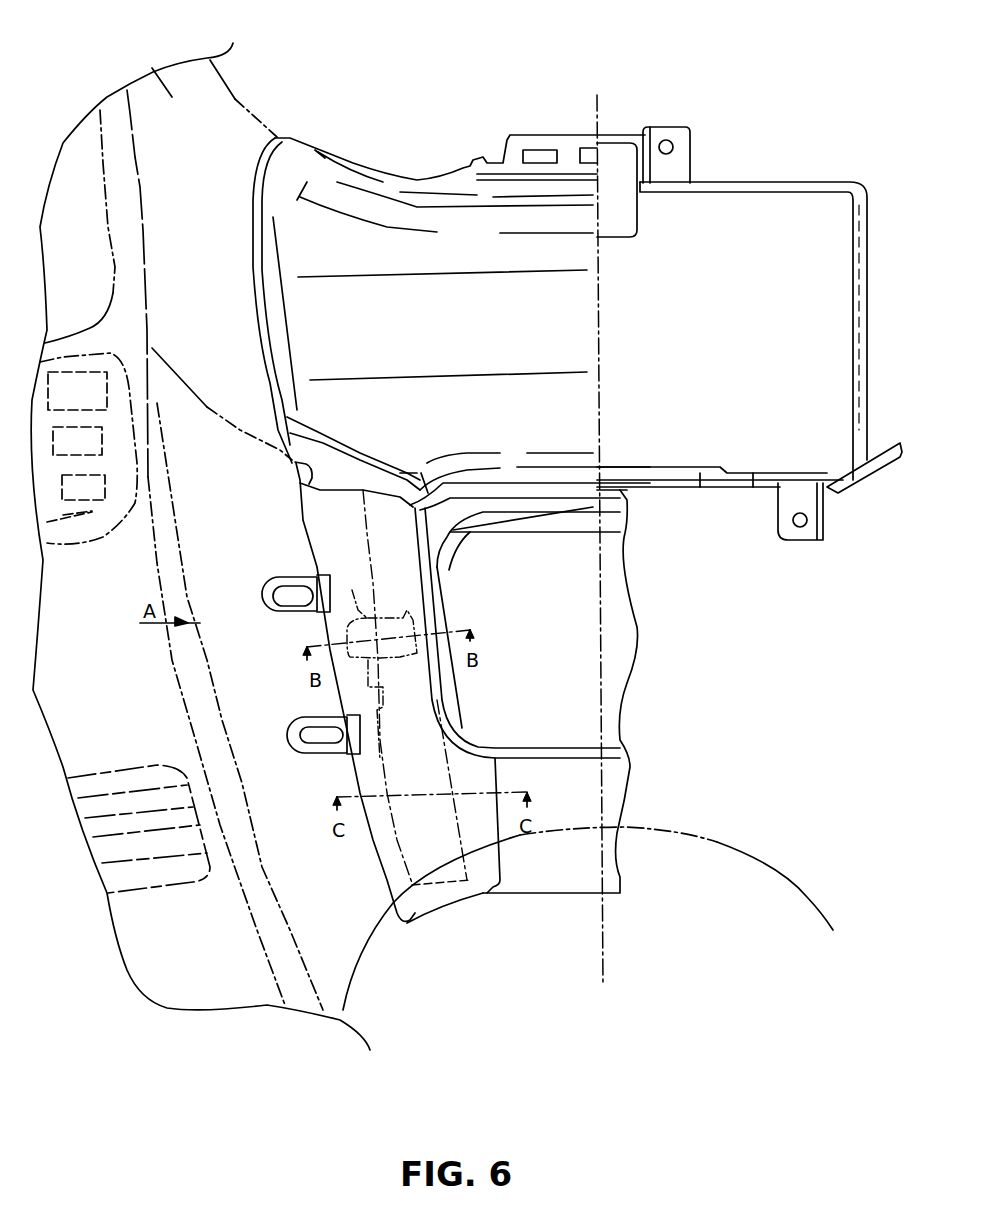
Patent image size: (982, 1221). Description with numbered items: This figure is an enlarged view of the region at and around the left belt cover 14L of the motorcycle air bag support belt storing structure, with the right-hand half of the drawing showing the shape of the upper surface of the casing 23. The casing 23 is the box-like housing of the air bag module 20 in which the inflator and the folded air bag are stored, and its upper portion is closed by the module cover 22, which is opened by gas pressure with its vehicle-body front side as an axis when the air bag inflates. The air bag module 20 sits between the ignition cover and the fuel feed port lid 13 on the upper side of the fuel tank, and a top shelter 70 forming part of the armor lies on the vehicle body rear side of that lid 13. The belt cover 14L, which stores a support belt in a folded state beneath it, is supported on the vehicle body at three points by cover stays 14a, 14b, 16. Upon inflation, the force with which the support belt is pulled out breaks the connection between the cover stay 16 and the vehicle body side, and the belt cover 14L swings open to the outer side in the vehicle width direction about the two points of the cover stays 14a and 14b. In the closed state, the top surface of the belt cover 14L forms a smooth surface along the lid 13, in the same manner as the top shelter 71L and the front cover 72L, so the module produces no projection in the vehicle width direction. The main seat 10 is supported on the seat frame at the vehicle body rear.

The main seat 10 is at (353, 970).
The fuel feed port lid 13 is at (573, 680).
The belt cover 14L is at (320, 517).
The cover stay 14a is at (275, 578).
The cover stay 14b is at (294, 755).
The cover stay 16 is at (403, 687).
The air bag module 20 is at (253, 267).
The module cover 22 is at (310, 337).
The casing 23 is at (862, 347).
The top shelter 70 is at (573, 790).
The top shelter 71L is at (253, 707).
The front cover 72L is at (157, 62).